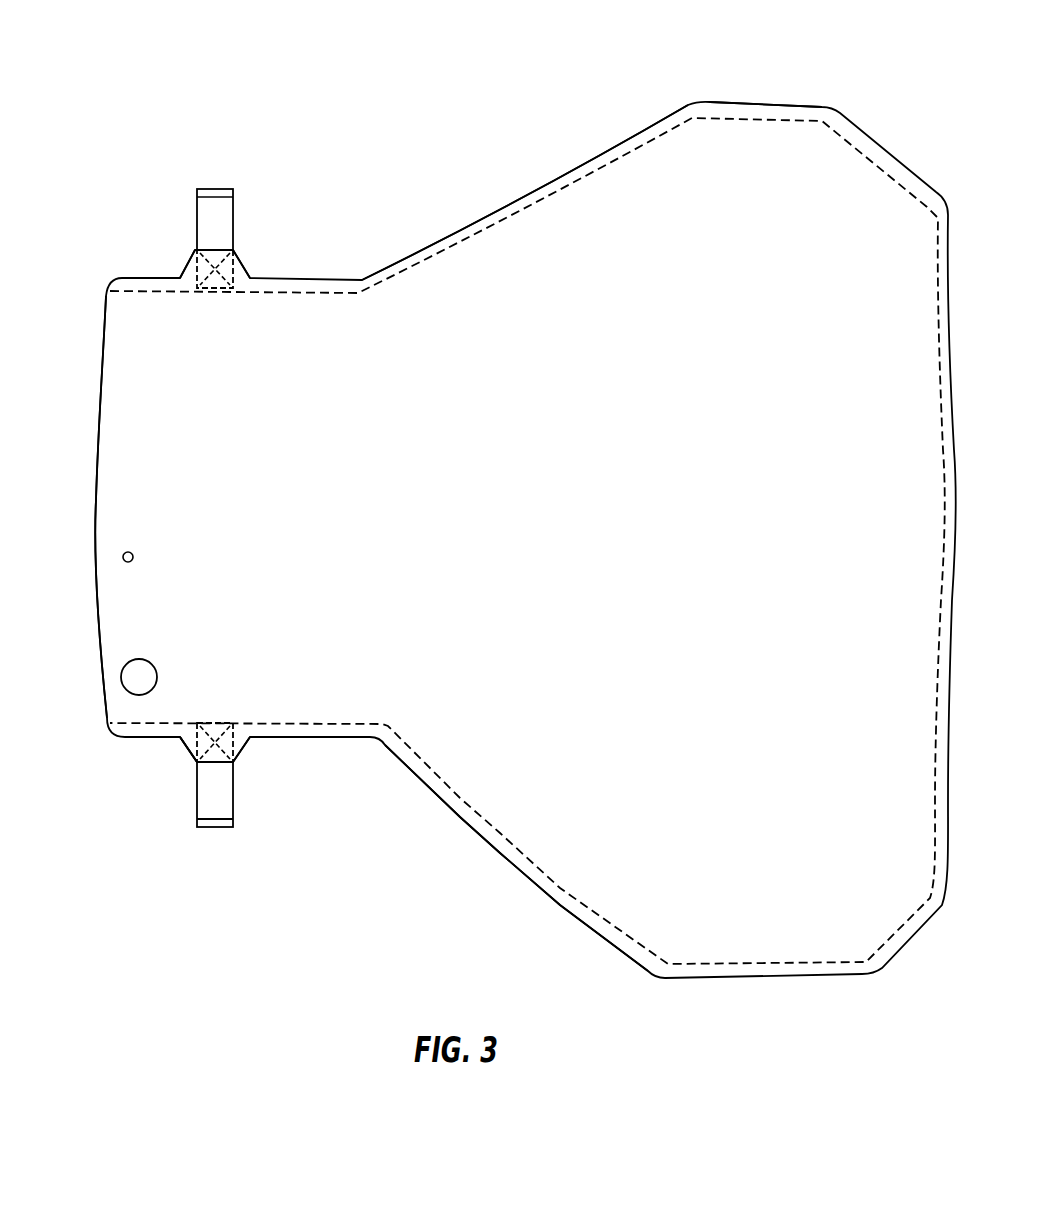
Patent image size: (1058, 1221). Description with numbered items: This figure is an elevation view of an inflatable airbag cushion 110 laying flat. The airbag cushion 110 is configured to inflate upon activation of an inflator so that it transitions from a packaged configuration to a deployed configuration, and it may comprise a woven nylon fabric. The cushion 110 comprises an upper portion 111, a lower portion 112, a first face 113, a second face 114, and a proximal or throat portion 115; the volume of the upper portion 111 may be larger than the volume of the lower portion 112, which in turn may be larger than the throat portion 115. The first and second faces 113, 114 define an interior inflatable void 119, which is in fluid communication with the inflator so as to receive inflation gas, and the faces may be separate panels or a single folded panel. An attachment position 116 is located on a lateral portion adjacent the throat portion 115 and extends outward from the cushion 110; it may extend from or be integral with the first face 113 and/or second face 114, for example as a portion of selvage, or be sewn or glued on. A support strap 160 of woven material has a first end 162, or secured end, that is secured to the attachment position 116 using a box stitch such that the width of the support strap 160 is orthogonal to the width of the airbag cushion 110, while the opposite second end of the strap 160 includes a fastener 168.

The airbag cushion 110 is at (657, 78).
The upper portion 111 is at (800, 107).
The lower portion 112 is at (482, 840).
The first face 113 is at (545, 270).
The second face 114 is at (568, 163).
The throat portion 115 is at (327, 739).
The attachment position 116 is at (192, 258).
The interior inflatable void 119 is at (93, 437).
The support strap 160 is at (220, 222).
The first end 162 is at (195, 738).
The fastener 168 is at (223, 834).